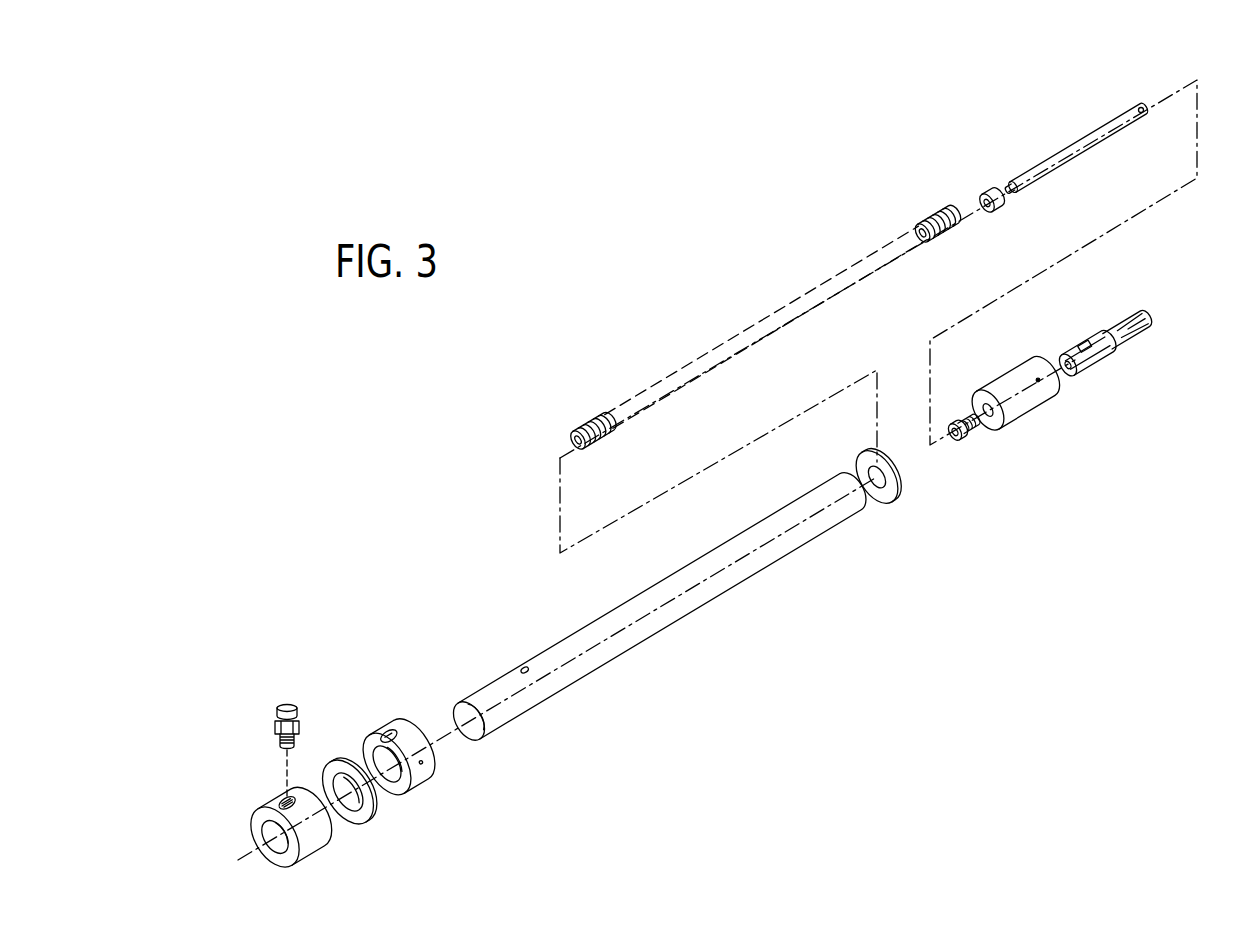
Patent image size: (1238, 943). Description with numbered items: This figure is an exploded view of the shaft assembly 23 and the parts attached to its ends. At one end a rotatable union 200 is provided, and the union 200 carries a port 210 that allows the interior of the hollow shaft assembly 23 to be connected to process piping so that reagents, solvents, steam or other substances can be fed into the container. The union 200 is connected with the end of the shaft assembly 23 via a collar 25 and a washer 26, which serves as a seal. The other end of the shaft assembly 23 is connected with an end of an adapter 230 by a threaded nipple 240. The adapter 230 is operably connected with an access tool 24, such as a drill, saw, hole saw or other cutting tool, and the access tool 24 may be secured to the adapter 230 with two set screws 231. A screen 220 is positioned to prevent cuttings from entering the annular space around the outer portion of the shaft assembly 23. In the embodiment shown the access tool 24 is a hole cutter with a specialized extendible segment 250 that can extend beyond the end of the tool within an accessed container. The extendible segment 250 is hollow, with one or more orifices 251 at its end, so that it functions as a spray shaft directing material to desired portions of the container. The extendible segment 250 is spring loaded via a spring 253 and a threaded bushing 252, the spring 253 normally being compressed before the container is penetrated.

The shaft assembly 23 is at (622, 657).
The access tool 24 is at (1150, 330).
The collar 25 is at (432, 773).
The washer 26 is at (372, 816).
The rotatable union 200 is at (315, 838).
The port 210 is at (300, 713).
The screen 220 is at (897, 496).
The adapter 230 is at (1030, 413).
The set screws 231 is at (1040, 381).
The threaded nipple 240 is at (962, 438).
The extendible segment 250 is at (1082, 138).
The orifices 251 is at (1140, 106).
The threaded bushing 252 is at (980, 193).
The spring 253 is at (714, 343).